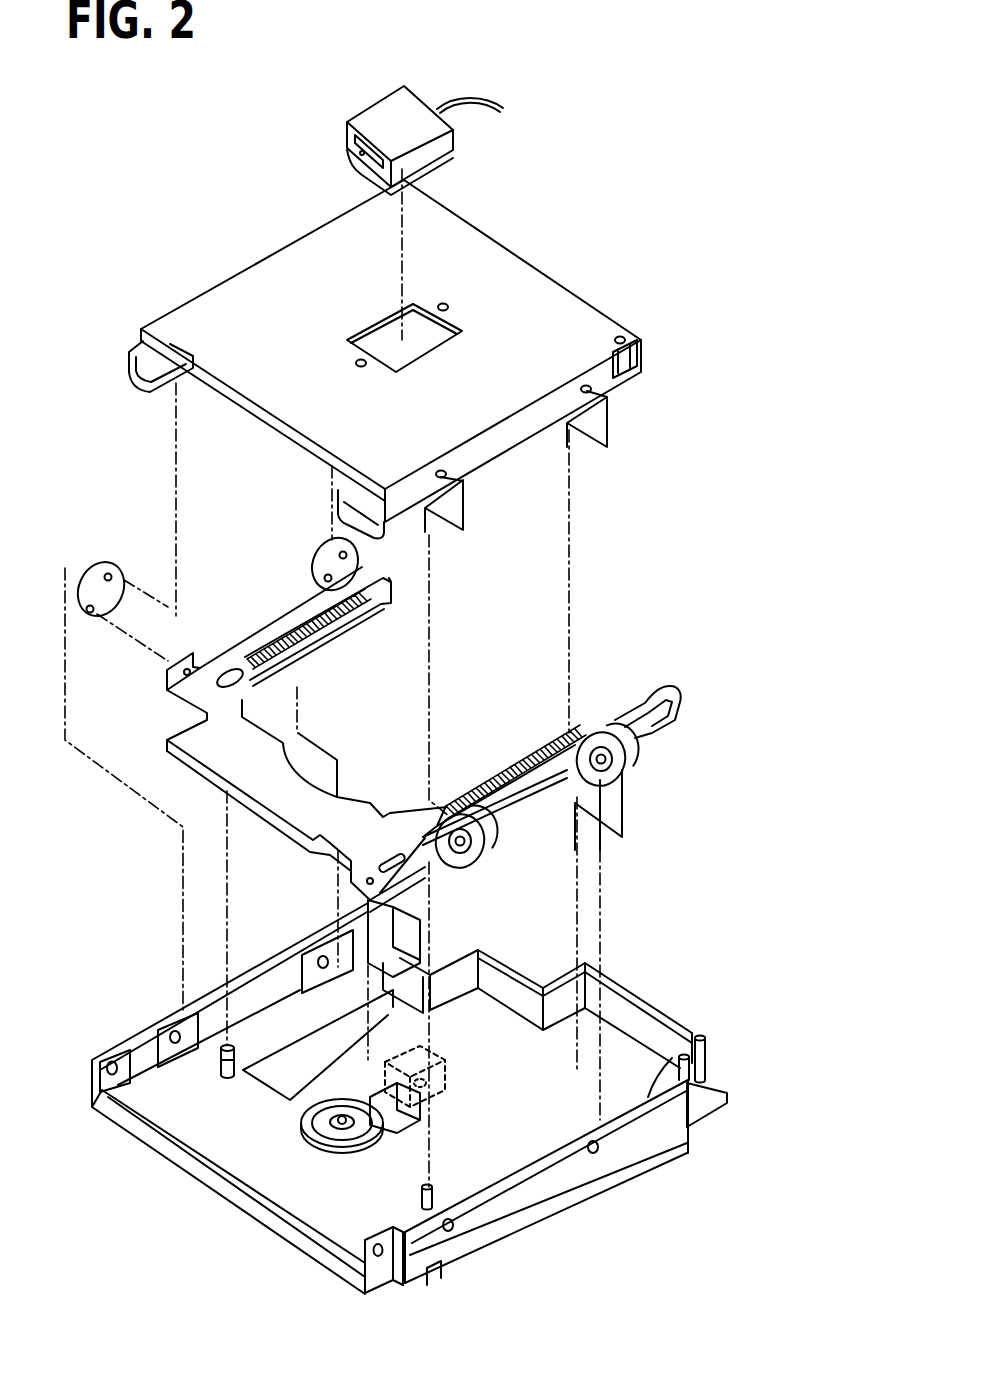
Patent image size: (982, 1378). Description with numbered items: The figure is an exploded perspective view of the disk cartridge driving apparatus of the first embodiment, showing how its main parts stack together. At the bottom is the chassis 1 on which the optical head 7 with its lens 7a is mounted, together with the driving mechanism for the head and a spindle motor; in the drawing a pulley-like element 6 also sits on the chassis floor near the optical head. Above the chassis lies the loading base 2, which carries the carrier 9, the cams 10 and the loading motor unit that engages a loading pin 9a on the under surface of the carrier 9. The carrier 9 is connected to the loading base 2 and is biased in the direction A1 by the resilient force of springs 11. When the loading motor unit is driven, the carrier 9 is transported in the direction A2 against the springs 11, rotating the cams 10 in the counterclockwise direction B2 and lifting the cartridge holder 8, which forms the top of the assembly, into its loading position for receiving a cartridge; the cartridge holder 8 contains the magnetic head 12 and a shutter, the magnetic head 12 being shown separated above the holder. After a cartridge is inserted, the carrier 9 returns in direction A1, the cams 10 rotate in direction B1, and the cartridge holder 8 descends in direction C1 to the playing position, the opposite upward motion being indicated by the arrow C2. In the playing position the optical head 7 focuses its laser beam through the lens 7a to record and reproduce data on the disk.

The chassis 1 is at (612, 1053).
The loading base 2 is at (220, 1145).
The pulley 6 is at (337, 1143).
The optical head 7 is at (440, 1107).
The lens 7a is at (432, 1067).
The cartridge holder 8 is at (528, 274).
The carrier 9 is at (291, 812).
The loading pin 9a is at (366, 900).
The cams 10 is at (98, 566).
The springs 11 is at (331, 636).
The magnetic head 12 is at (368, 116).
The direction A1 is at (245, 823).
The direction A2 is at (376, 748).
The direction B1 is at (129, 553).
The counterclockwise direction B2 is at (68, 584).
The direction C1 is at (518, 460).
The direction arrow C2 is at (482, 356).